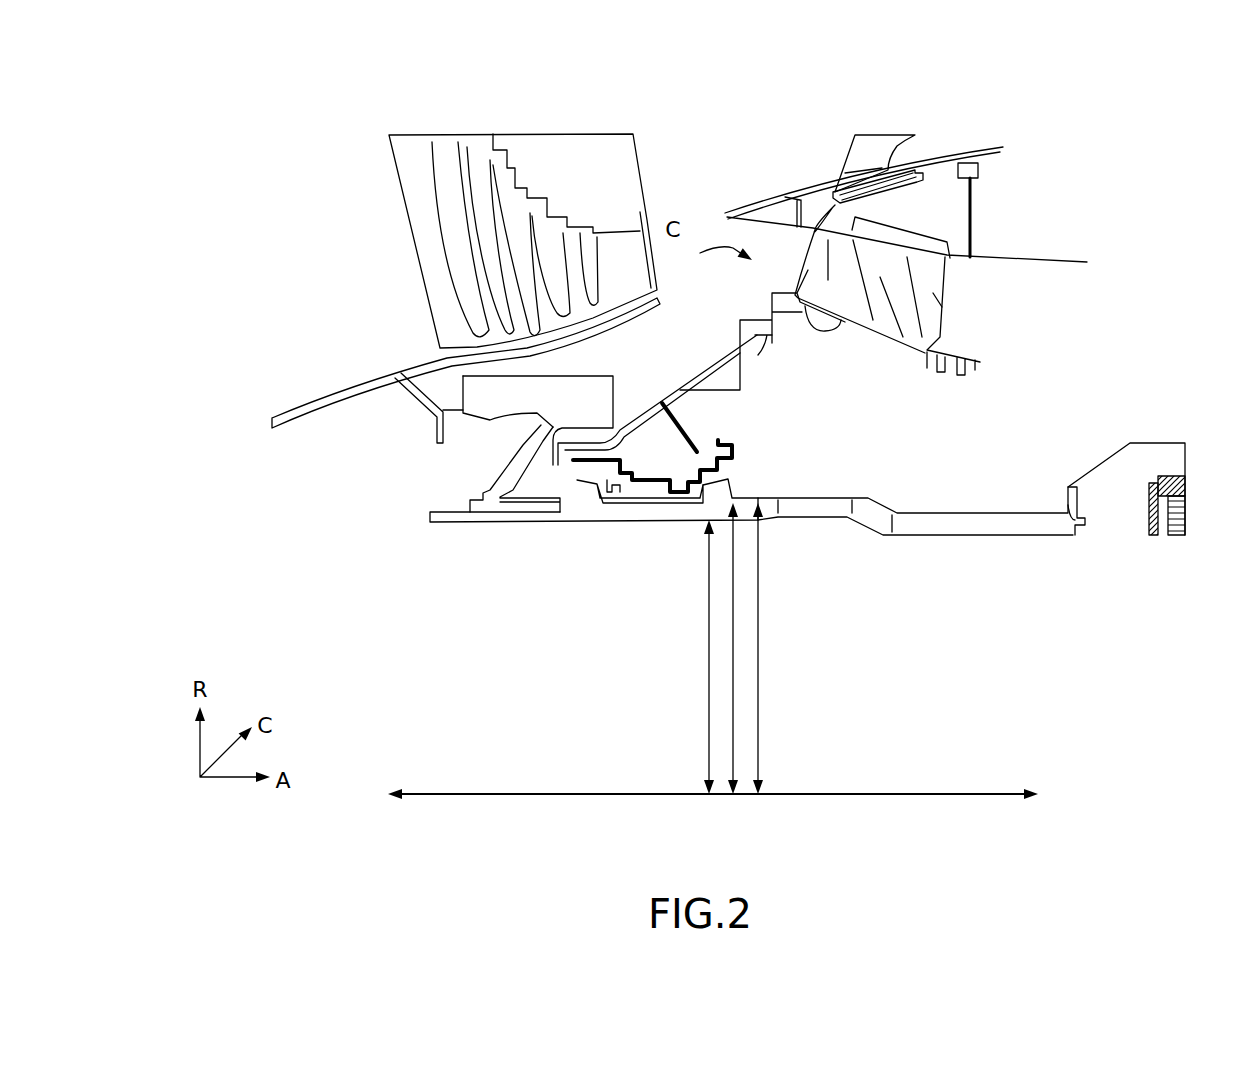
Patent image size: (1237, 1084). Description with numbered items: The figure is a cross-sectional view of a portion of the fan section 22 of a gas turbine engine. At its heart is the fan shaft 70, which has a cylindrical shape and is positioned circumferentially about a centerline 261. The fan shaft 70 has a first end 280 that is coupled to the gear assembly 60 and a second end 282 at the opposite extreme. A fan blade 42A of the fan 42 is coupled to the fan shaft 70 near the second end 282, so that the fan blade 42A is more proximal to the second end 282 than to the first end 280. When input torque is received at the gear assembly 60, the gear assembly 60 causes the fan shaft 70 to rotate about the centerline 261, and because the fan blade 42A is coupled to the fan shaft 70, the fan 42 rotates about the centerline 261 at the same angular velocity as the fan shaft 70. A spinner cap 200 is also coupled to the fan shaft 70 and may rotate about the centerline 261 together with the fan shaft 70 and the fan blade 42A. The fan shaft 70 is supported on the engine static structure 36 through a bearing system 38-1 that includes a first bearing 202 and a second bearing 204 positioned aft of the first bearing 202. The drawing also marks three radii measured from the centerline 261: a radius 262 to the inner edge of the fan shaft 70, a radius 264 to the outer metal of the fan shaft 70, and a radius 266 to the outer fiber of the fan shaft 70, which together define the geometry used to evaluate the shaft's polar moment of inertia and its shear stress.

The fan section 22 is at (728, 137).
The engine static structure 36 is at (918, 210).
The fan 42 is at (390, 190).
The fan blade 42A is at (432, 247).
The spinner cap 200 is at (308, 402).
The bearing system 38-1 is at (750, 452).
The second bearing 204 is at (737, 491).
The fan shaft 70 is at (527, 523).
The first bearing 202 is at (573, 492).
The second end 282 is at (430, 525).
The first end 280 is at (1077, 537).
The gear assembly 60 is at (1185, 508).
The radius 262 is at (709, 711).
The radius 264 is at (733, 759).
The radius 266 is at (758, 708).
The centerline 261 is at (925, 794).